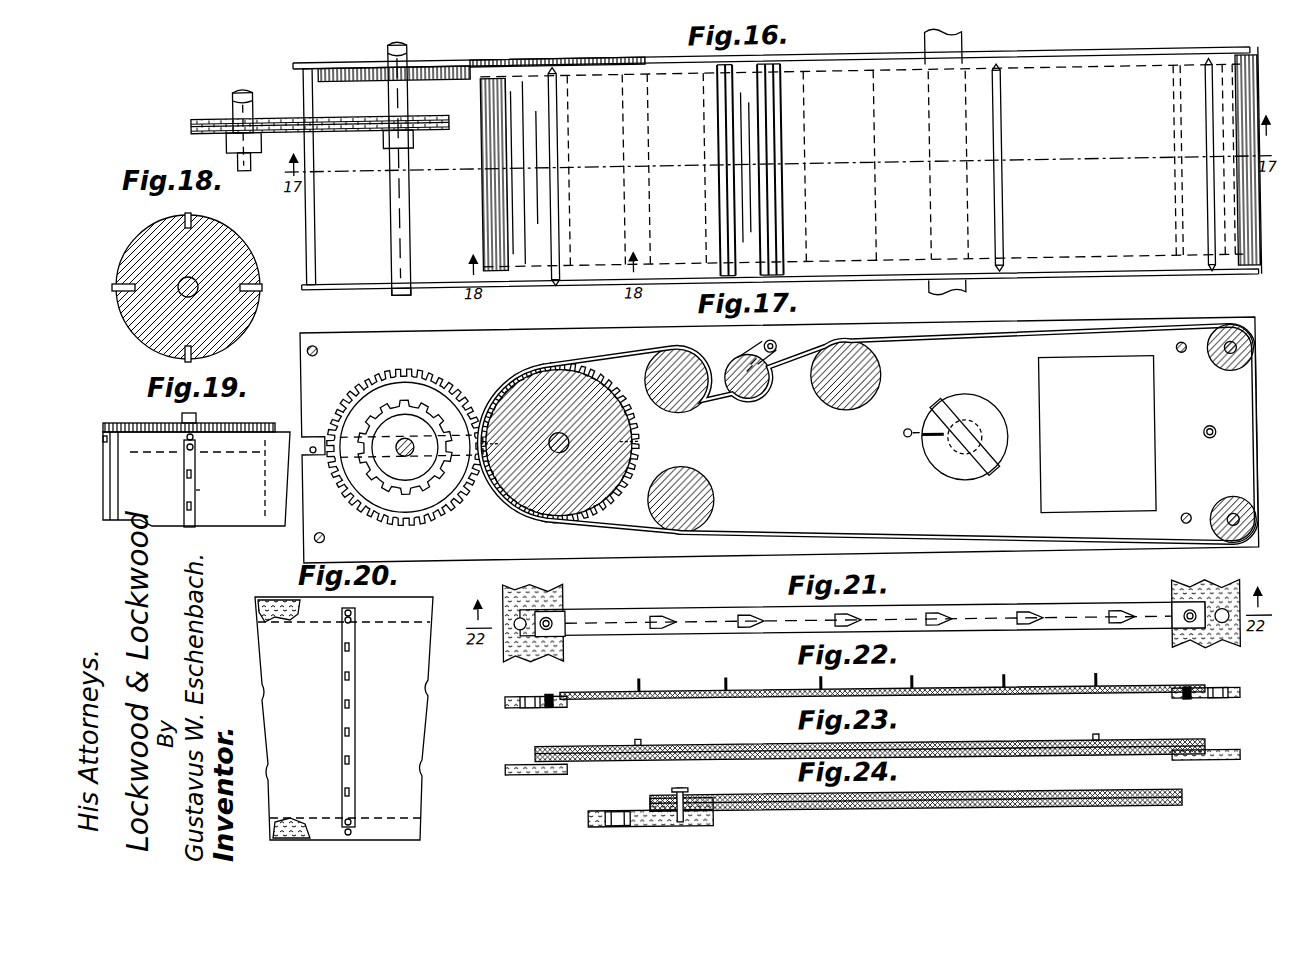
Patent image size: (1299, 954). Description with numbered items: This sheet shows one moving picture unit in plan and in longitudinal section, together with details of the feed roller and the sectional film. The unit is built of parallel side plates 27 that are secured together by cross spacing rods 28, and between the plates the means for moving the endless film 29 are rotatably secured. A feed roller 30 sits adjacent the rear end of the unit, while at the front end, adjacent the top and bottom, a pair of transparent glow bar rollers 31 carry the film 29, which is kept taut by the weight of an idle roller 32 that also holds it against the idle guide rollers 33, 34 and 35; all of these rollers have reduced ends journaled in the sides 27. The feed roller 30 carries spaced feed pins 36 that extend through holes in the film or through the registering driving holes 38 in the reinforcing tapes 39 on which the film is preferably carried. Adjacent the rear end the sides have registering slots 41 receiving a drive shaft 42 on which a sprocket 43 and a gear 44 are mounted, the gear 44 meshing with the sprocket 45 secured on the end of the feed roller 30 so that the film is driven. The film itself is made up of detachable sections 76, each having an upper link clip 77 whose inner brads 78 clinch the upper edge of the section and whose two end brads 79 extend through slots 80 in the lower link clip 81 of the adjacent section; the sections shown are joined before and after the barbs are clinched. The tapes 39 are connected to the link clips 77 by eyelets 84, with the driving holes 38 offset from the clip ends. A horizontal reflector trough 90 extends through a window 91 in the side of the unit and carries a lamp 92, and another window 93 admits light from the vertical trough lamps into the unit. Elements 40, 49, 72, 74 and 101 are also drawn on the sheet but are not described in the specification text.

In FIG. 16, the side plates 27 is at (778, 156).
In FIG. 17, the side plates 27 is at (505, 333).
In FIG. 16, the cross spacing rods 28 is at (312, 100).
In FIG. 17, the cross spacing rods 28 is at (317, 351).
In FIG. 16, the endless film 29 is at (490, 205).
In FIG. 17, the endless film 29 is at (1025, 343).
In FIG. 20, the endless film 29 is at (433, 597).
In FIG. 17, the feed roller 30 is at (630, 460).
In FIG. 18, the feed roller 30 is at (246, 243).
In FIG. 16, the glow bar rollers 31 is at (1237, 66).
In FIG. 17, the glow bar rollers 31 is at (1230, 386).
In FIG. 16, the idle roller 32 is at (745, 140).
In FIG. 17, the idle roller 32 is at (743, 362).
In FIG. 17, the idle guide roller 33 is at (848, 412).
In FIG. 17, the idle guide roller 34 is at (690, 411).
In FIG. 17, the idle guide roller 35 is at (712, 499).
In FIG. 17, the feed pins 36 is at (628, 442).
In FIG. 18, the feed pins 36 is at (192, 214).
In FIG. 19, the feed pins 36 is at (194, 441).
In FIG. 20, the driving holes 38 is at (352, 612).
In FIG. 21, the driving holes 38 is at (514, 620).
In FIG. 22, the driving holes 38 is at (526, 709).
In FIG. 24, the driving holes 38 is at (625, 813).
In FIG. 20, the reinforcing tapes 39 is at (270, 600).
In FIG. 21, the reinforcing tapes 39 is at (505, 656).
In FIG. 22, the reinforcing tapes 39 is at (505, 707).
In FIG. 23, the reinforcing tapes 39 is at (520, 776).
In FIG. 24, the reinforcing tapes 39 is at (588, 823).
In FIG. 17, the bolt 40 is at (1202, 447).
In FIG. 16, the slots 41 is at (395, 292).
In FIG. 17, the slots 41 is at (311, 455).
In FIG. 16, the drive shaft 42 is at (396, 236).
In FIG. 17, the drive shaft 42 is at (405, 442).
In FIG. 16, the sprocket 43 is at (412, 142).
In FIG. 17, the sprocket 43 is at (412, 412).
In FIG. 16, the gear 44 is at (442, 70).
In FIG. 17, the gear 44 is at (441, 384).
In FIG. 16, the sprocket 45 is at (500, 64).
In FIG. 17, the sprocket 45 is at (535, 374).
In FIG. 19, the sprocket 45 is at (268, 412).
In FIG. 16, the shaft 49 is at (232, 100).
In FIG. 24, the layer 72 is at (905, 792).
In FIG. 16, the bar 74 is at (347, 134).
In FIG. 16, the film sections 76 is at (877, 134).
In FIG. 19, the film sections 76 is at (268, 528).
In FIG. 20, the film sections 76 is at (268, 704).
In FIG. 23, the film sections 76 is at (690, 749).
In FIG. 24, the film sections 76 is at (1105, 797).
In FIG. 16, the upper link clip 77 is at (557, 149).
In FIG. 19, the upper link clip 77 is at (200, 491).
In FIG. 21, the upper link clip 77 is at (686, 610).
In FIG. 23, the upper link clip 77 is at (748, 763).
In FIG. 24, the upper link clip 77 is at (770, 814).
In FIG. 19, the inner brads 78 is at (196, 508).
In FIG. 20, the inner brads 78 is at (342, 680).
In FIG. 21, the inner brads 78 is at (672, 618).
In FIG. 19, the end brads 79 is at (196, 474).
In FIG. 20, the end brads 79 is at (352, 648).
In FIG. 21, the end brads 79 is at (647, 617).
In FIG. 22, the end brads 79 is at (643, 690).
In FIG. 23, the end brads 79 is at (637, 747).
In FIG. 20, the slots 80 is at (342, 651).
In FIG. 23, the lower link clip 81 is at (700, 750).
In FIG. 24, the lower link clip 81 is at (1133, 797).
In FIG. 19, the eyelets 84 is at (186, 462).
In FIG. 20, the eyelets 84 is at (340, 621).
In FIG. 21, the eyelets 84 is at (552, 619).
In FIG. 22, the eyelets 84 is at (556, 691).
In FIG. 24, the eyelets 84 is at (680, 790).
In FIG. 16, the reflector trough 90 is at (962, 48).
In FIG. 17, the reflector trough 90 is at (940, 470).
In FIG. 17, the window 91 is at (971, 490).
In FIG. 17, the lamp 92 is at (986, 458).
In FIG. 17, the window 93 is at (1100, 518).
In FIG. 17, the lever 101 is at (918, 452).